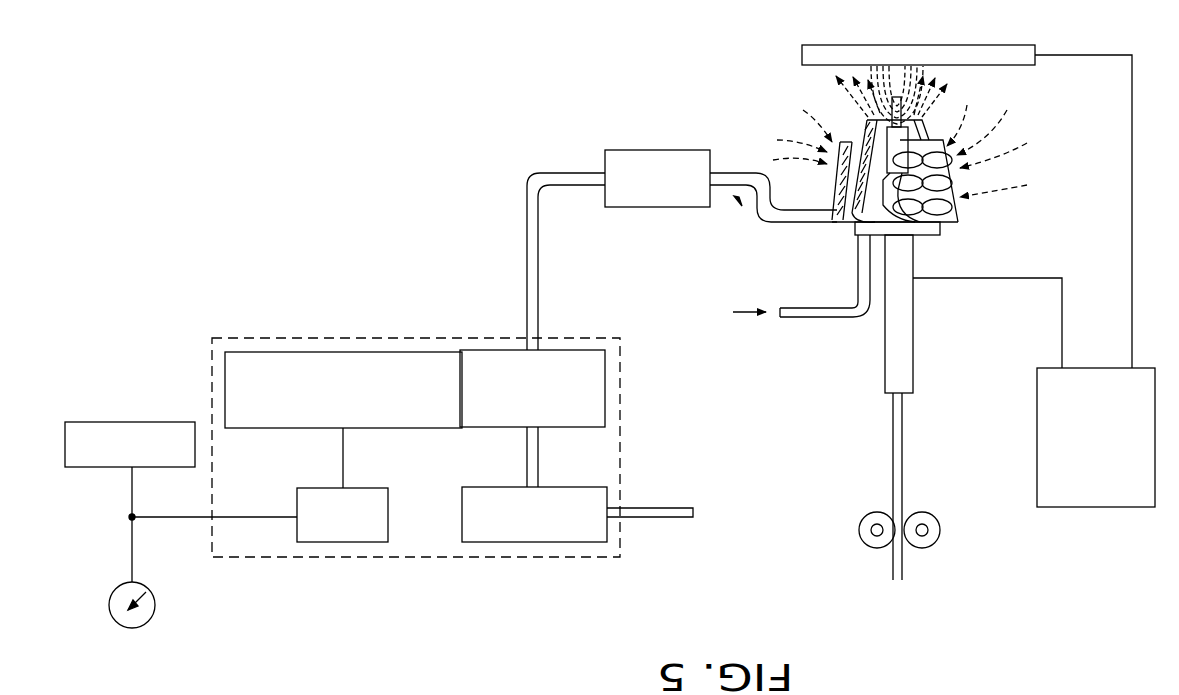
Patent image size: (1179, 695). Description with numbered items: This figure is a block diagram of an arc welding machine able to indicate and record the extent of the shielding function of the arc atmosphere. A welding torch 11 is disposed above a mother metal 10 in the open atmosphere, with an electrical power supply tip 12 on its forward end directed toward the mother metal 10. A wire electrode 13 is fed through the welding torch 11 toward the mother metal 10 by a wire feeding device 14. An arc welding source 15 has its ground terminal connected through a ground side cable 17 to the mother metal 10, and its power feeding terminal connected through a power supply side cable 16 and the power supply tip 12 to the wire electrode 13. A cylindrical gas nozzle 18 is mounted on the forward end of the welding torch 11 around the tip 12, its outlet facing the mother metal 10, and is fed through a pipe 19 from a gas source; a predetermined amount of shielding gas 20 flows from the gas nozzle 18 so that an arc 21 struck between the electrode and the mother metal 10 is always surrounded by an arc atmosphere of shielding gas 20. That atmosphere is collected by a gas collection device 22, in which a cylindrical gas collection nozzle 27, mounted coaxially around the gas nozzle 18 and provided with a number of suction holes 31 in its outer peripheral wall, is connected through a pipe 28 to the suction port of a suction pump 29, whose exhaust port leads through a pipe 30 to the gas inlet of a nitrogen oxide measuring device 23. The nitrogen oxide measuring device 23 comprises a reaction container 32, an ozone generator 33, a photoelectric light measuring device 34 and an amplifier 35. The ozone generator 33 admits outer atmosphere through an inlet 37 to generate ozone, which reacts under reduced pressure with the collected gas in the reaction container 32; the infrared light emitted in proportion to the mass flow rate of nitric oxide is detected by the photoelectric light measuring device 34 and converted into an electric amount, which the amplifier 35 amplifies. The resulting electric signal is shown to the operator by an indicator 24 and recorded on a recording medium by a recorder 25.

The mother metal 10 is at (836, 45).
The welding torch 11 is at (885, 362).
The electrical power supply tip 12 is at (908, 131).
The wire electrode 13 is at (893, 416).
The wire feeding device 14 is at (870, 546).
The arc welding source 15 is at (1037, 412).
The power supply side cable 16 is at (1003, 278).
The ground side cable 17 is at (1132, 192).
The gas nozzle 18 is at (868, 125).
The pipe 19 is at (804, 318).
The shielding gas 20 is at (857, 97).
The arc 21 is at (915, 63).
The gas collection device 22 is at (745, 218).
The nitrogen oxide measuring device 23 is at (470, 338).
The indicator 24 is at (109, 605).
The recorder 25 is at (150, 422).
The gas collection nozzle 27 is at (836, 197).
The pipe 28 is at (717, 186).
The suction pump 29 is at (654, 207).
The pipe 30 is at (570, 185).
The suction holes 31 is at (957, 205).
The reaction container 32 is at (587, 427).
The ozone generator 33 is at (545, 542).
The photoelectric light measuring device 34 is at (268, 352).
The amplifier 35 is at (350, 542).
The inlet 37 is at (685, 517).